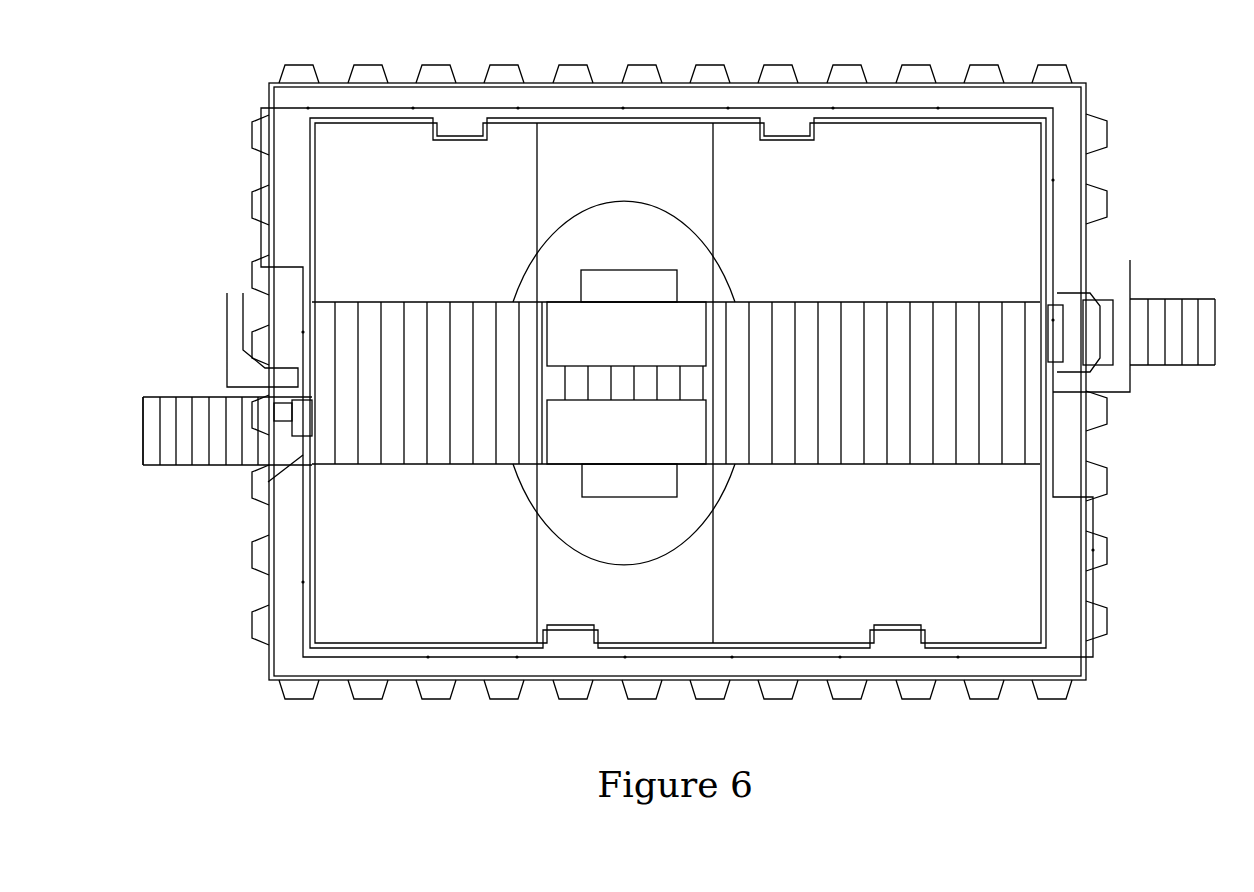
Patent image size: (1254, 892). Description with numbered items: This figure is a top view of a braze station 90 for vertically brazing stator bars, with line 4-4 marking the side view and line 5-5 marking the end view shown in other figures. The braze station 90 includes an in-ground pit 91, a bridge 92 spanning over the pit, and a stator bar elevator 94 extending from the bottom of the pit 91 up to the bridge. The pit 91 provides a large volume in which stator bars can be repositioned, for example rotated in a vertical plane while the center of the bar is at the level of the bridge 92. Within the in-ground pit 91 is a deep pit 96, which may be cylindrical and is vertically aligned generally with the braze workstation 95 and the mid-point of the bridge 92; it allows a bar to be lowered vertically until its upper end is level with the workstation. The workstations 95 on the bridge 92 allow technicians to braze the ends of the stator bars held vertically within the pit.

The braze station 90 is at (1027, 120).
The pit 91 is at (1097, 568).
The bridge 92 is at (449, 342).
The stator bar elevator 94 is at (627, 270).
The workstation 95 is at (688, 335).
The deep pit 96 is at (553, 592).
The line 4- 4 is at (297, 540).
The line 5- 5 is at (1060, 102).